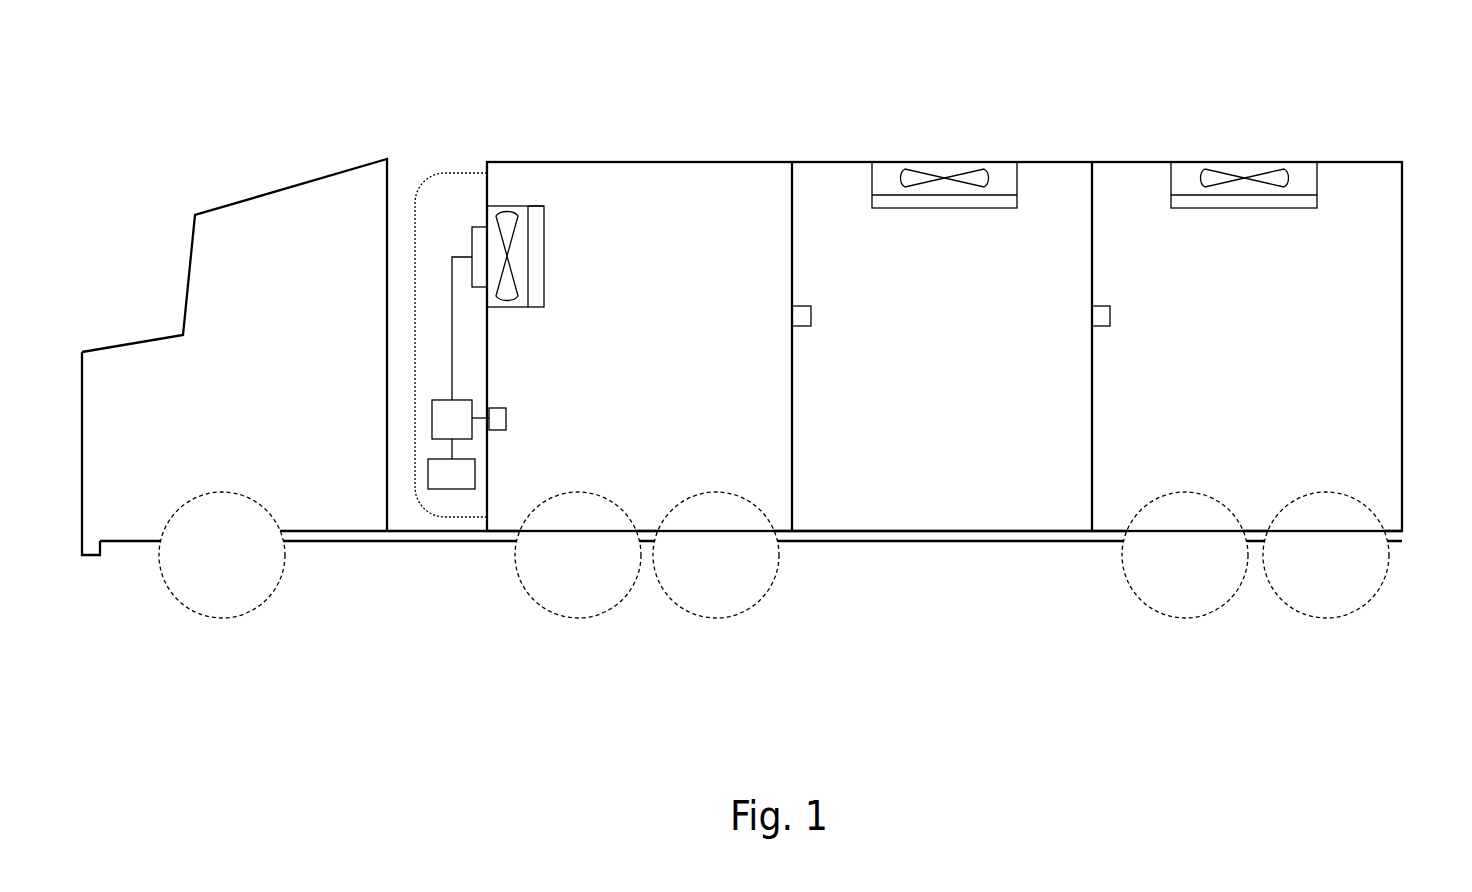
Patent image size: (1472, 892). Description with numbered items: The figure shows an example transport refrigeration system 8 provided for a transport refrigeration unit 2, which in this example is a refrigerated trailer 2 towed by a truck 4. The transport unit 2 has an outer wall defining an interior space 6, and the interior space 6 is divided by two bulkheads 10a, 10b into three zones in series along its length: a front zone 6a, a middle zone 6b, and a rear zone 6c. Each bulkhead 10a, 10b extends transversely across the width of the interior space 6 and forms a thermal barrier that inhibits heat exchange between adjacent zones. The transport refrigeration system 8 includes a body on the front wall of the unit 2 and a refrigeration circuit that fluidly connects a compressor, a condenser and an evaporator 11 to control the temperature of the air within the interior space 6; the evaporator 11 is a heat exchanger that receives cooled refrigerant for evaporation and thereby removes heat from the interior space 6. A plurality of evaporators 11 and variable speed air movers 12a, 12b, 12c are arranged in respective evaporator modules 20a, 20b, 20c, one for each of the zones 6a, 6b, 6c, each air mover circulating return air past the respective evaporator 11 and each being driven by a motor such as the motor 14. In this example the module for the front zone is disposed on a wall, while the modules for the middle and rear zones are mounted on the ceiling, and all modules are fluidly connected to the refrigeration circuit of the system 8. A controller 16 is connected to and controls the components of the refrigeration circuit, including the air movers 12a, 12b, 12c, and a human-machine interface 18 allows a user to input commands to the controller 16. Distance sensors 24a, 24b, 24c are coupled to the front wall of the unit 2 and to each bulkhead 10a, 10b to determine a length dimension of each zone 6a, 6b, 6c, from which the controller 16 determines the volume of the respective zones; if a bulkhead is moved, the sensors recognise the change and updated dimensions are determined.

The transport refrigeration unit 2 is at (727, 160).
The truck 4 is at (178, 365).
The interior space 6 is at (682, 215).
The front zone 6a is at (625, 205).
The middle zone 6b is at (838, 200).
The rear zone 6c is at (1123, 205).
The transport refrigeration system 8 is at (451, 173).
The bulkhead 10a is at (793, 508).
The bulkhead 10b is at (1088, 507).
The evaporator 11 is at (535, 217).
The air mover 12a is at (505, 230).
The air mover 12b is at (963, 175).
The air mover 12c is at (1268, 175).
The motor 14 is at (477, 240).
The controller 16 is at (443, 423).
The human-machine interface 18 is at (450, 480).
The evaporator module 20a is at (517, 206).
The evaporator module 20b is at (1020, 178).
The evaporator module 20c is at (1318, 173).
The distance sensor 24a is at (496, 432).
The distance sensor 24b is at (805, 328).
The distance sensor 24c is at (1111, 318).